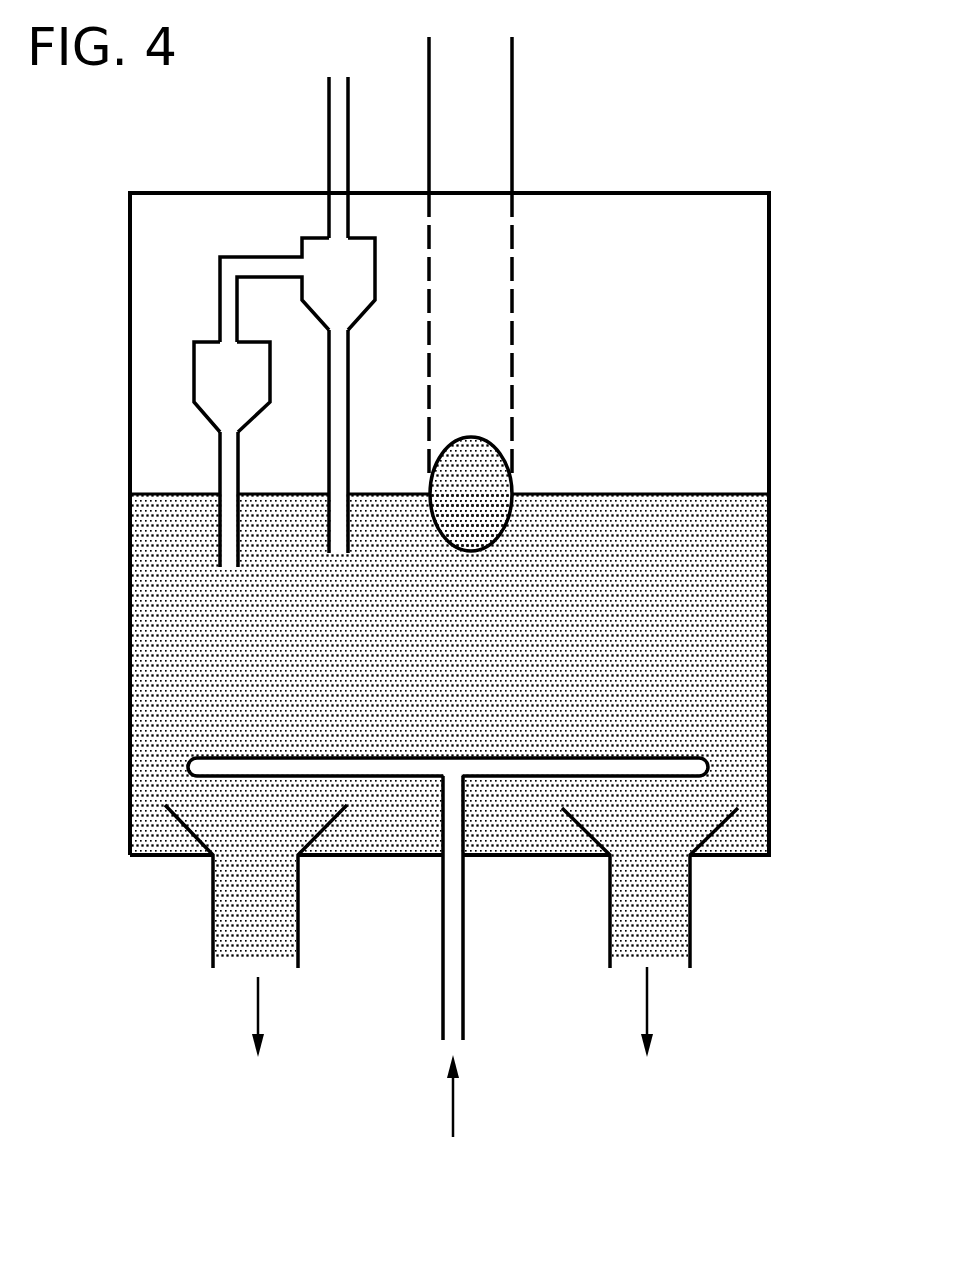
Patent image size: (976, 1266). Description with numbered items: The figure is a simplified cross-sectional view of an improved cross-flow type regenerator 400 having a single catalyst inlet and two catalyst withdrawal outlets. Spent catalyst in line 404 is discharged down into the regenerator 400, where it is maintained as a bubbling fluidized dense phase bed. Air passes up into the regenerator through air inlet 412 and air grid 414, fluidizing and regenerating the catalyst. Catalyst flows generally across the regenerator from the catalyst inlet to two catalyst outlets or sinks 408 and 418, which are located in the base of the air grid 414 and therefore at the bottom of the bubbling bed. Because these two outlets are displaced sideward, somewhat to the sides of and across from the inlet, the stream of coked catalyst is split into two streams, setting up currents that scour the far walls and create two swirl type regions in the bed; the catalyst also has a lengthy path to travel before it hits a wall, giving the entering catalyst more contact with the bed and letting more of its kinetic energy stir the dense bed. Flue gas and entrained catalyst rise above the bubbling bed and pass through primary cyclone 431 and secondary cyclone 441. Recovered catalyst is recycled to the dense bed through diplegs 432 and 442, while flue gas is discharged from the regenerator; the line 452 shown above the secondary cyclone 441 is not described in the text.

The regenerator 400 is at (770, 555).
The line 404 is at (512, 117).
The catalyst outlet 408 is at (213, 920).
The air inlet 412 is at (463, 948).
The air grid 414 is at (690, 779).
The catalyst outlet 418 is at (690, 918).
The primary cyclone 431 is at (194, 360).
The dipleg 432 is at (220, 536).
The secondary cyclone 441 is at (312, 236).
The dipleg 442 is at (330, 530).
The feed tube 452 is at (329, 152).